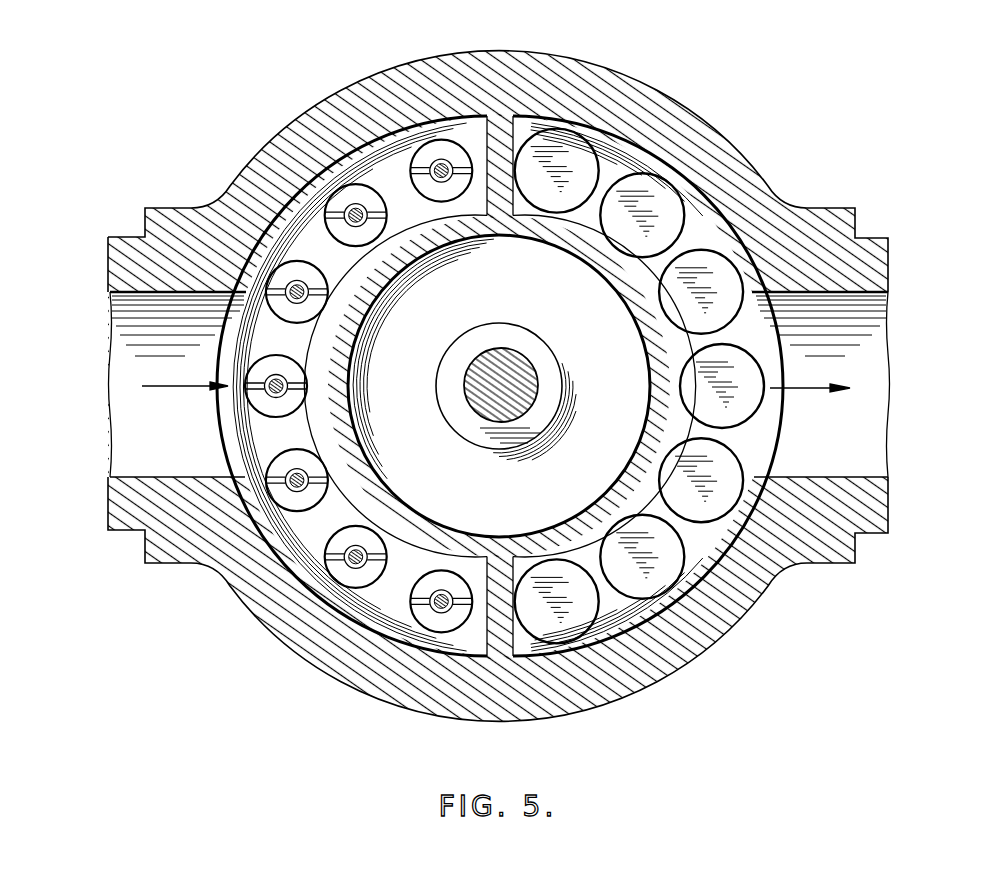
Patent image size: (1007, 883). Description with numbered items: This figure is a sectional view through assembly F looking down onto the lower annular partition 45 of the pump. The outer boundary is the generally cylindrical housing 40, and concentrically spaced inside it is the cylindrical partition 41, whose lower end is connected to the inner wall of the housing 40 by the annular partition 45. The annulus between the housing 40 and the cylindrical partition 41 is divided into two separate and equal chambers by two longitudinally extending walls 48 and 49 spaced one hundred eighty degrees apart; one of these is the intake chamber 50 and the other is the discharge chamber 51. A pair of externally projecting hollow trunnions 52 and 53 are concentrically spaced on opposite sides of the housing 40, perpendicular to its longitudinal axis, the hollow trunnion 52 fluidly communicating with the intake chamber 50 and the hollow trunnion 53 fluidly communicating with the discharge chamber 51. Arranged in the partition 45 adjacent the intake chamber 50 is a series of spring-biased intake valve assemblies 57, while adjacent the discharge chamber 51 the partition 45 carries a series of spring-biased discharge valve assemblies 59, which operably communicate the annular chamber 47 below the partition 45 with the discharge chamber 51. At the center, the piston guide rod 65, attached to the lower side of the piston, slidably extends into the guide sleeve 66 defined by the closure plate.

The housing 40 is at (703, 146).
The cylindrical partition 41 is at (643, 334).
The annular partition 45 is at (330, 338).
The annular chamber 47 is at (352, 600).
The longitudinally extending wall 48 is at (527, 133).
The longitudinally extending wall 49 is at (495, 630).
The intake chamber 50 is at (390, 173).
The discharge chamber 51 is at (703, 233).
The hollow trunnion 52 is at (128, 240).
The hollow trunnion 53 is at (867, 247).
The spring-biased intake valve assemblies 57 is at (444, 170).
The spring-biased discharge valve assemblies 59 is at (643, 193).
The piston guide rod 65 is at (477, 392).
The guide sleeve 66 is at (493, 329).